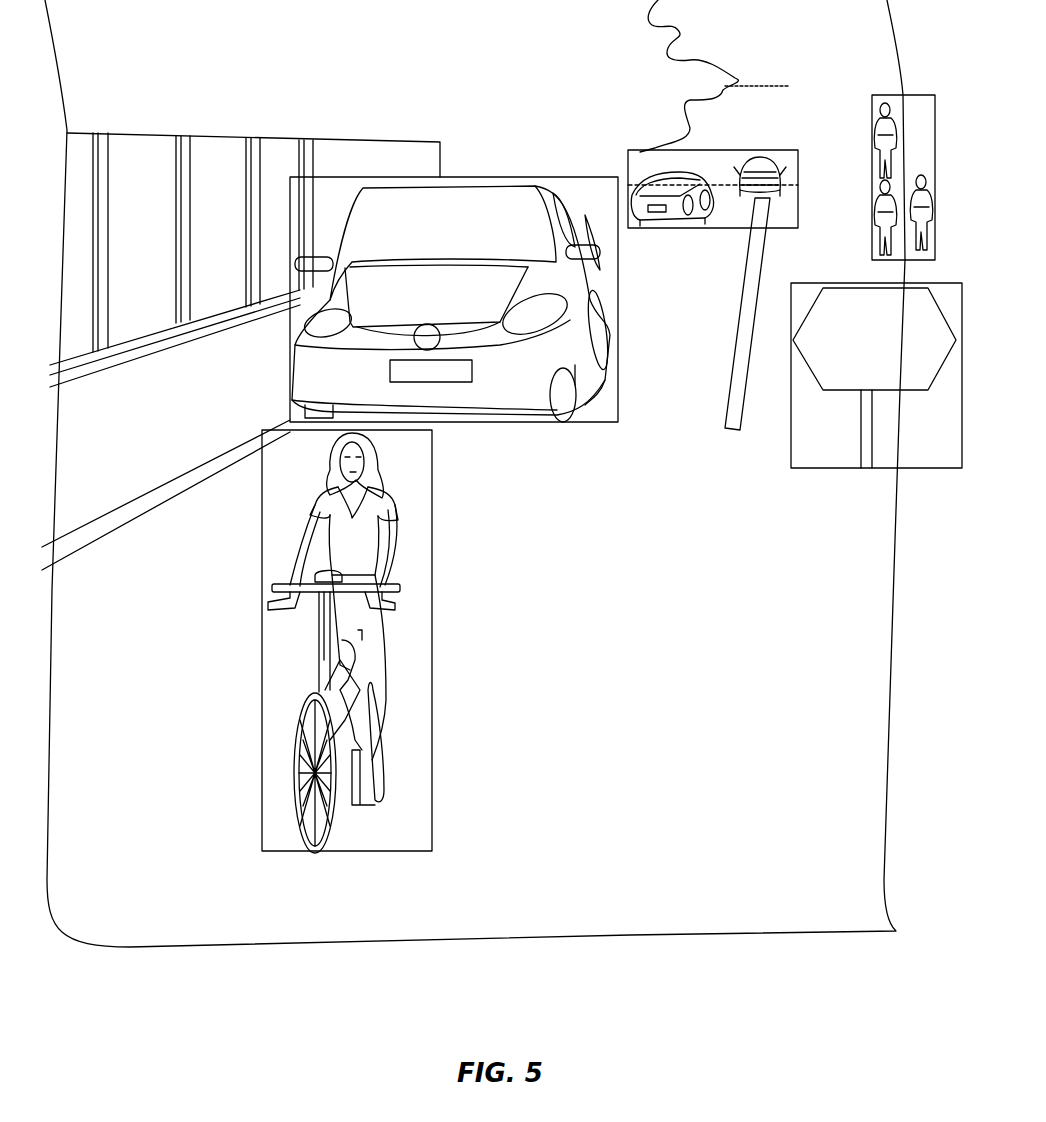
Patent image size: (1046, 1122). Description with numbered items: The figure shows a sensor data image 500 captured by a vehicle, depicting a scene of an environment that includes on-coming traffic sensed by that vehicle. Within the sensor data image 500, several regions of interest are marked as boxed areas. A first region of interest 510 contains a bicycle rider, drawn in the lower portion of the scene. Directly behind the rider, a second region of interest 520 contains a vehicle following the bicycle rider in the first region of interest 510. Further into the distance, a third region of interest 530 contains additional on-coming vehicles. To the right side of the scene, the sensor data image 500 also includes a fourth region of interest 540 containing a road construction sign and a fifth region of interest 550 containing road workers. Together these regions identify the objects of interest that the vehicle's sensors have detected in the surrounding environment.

The sensor data image 500 is at (473, 473).
The first region of interest 510 is at (323, 852).
The second region of interest 520 is at (592, 424).
The third region of interest 530 is at (740, 230).
The fourth region of interest 540 is at (854, 470).
The fifth region of interest 550 is at (872, 143).